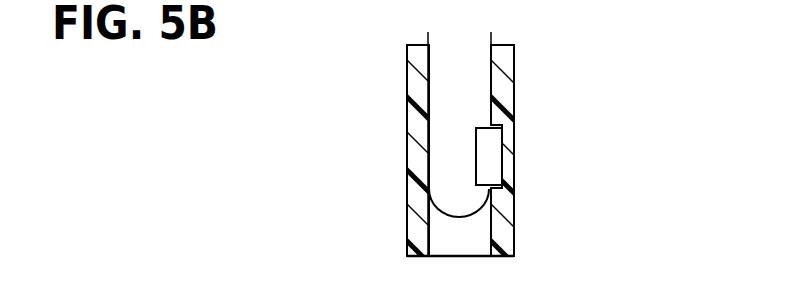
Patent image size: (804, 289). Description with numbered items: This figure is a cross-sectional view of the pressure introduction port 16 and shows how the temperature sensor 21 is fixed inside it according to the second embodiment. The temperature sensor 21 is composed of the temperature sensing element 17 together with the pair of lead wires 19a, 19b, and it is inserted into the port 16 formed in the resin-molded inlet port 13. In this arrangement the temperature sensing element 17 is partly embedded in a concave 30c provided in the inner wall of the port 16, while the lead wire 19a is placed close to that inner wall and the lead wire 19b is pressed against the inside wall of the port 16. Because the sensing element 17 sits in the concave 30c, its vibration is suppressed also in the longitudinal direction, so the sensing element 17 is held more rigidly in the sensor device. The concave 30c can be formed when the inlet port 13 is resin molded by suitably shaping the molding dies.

The inlet port 13 is at (407, 133).
The pressure introduction port 16 is at (445, 236).
The temperature sensing element 17 is at (490, 158).
The lead wire 19a is at (491, 33).
The lead wire 19b is at (428, 33).
The temperature sensor 21 is at (496, 120).
The concave 30c is at (514, 218).